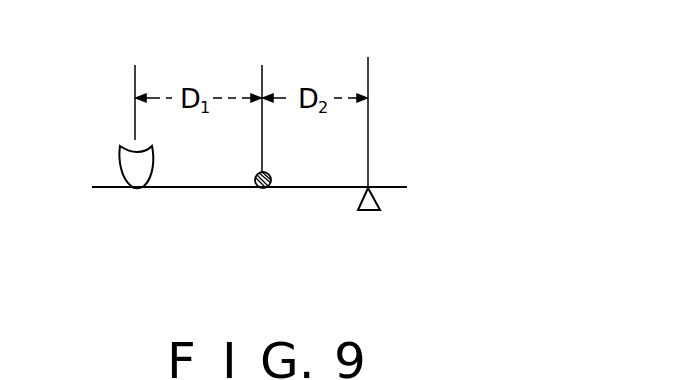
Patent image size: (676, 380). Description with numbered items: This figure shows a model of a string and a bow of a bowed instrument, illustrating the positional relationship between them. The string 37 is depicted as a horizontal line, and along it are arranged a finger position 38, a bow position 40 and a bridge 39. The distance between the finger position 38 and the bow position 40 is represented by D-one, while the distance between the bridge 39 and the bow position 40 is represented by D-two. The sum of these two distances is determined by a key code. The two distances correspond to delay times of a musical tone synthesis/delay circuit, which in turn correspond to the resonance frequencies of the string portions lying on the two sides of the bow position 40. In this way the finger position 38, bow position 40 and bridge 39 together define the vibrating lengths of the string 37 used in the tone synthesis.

The string 37 is at (208, 188).
The finger position 38 is at (118, 162).
The bridge 39 is at (380, 212).
The bow position 40 is at (275, 172).